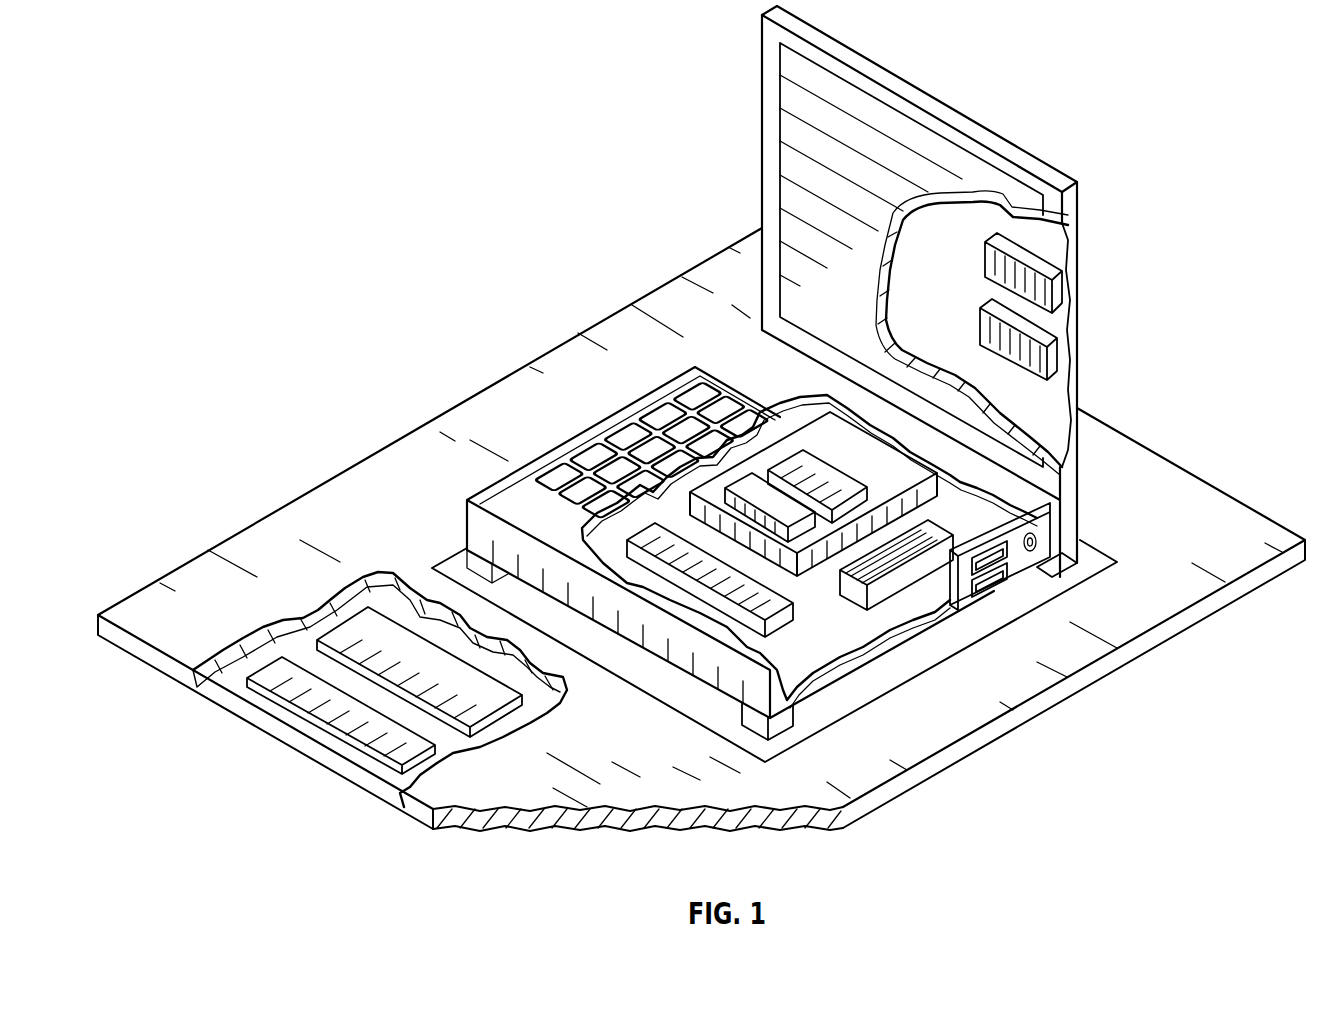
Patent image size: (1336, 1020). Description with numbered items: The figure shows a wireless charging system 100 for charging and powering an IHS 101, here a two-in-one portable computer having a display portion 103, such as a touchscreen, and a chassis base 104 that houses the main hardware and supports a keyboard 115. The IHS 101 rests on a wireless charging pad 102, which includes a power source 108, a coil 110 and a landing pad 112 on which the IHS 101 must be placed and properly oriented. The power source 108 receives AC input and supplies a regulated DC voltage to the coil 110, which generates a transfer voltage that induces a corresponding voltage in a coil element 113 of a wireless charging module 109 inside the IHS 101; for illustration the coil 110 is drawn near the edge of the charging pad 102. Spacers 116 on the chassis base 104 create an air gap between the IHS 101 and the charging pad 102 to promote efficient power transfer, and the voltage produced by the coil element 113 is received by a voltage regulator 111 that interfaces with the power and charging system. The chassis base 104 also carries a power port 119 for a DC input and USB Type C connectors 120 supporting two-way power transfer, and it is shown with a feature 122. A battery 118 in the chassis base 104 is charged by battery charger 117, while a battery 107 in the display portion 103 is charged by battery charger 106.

The wireless charging system 100 is at (452, 88).
The IHS 101 is at (805, 130).
The wireless charging pad 102 is at (322, 485).
The display portion 103 is at (921, 175).
The chassis base 104 is at (456, 534).
The battery charger 106 is at (1052, 290).
The battery 107 is at (1052, 350).
The power source 108 is at (340, 650).
The wireless charging module 109 is at (808, 437).
The coil 110 is at (272, 678).
The voltage regulator 111 is at (840, 488).
The landing pad 112 is at (704, 721).
The coil element 113 is at (742, 487).
The keyboard 115 is at (636, 422).
The spacers 116 is at (778, 724).
The battery charger 117 is at (890, 590).
The battery 118 is at (765, 603).
The power port 119 is at (1043, 535).
The USB Type C connectors 120 is at (1010, 568).
The hinge foot 122 is at (1093, 563).